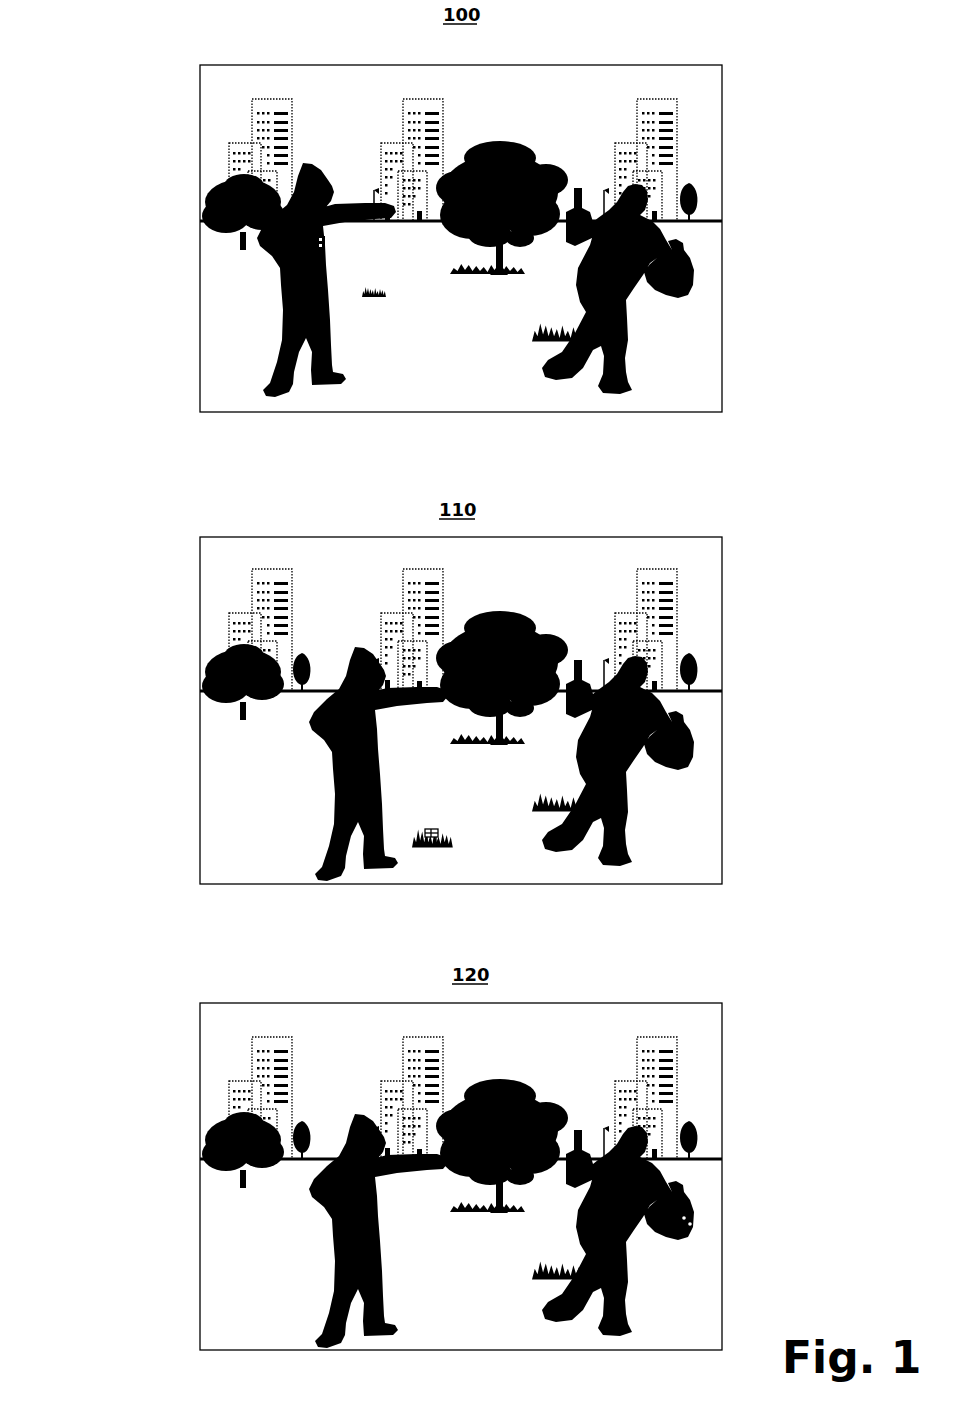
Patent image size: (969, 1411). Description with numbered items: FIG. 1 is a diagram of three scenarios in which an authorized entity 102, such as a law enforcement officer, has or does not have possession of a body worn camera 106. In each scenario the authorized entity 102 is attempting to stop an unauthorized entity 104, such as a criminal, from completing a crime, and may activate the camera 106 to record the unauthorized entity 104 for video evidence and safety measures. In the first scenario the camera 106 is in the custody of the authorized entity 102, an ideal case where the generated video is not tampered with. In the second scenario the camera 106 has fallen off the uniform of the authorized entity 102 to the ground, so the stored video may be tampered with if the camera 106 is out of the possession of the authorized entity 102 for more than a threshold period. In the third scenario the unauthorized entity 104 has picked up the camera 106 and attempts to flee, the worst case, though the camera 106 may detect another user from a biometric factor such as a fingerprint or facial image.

The authorized entity 102 is at (243, 755).
The unauthorized entity 104 is at (716, 760).
The body worn camera 106 is at (605, 739).